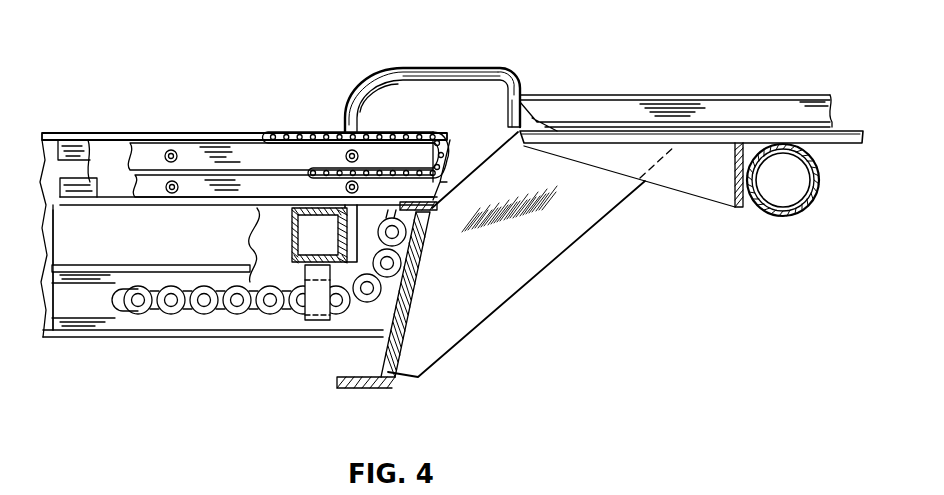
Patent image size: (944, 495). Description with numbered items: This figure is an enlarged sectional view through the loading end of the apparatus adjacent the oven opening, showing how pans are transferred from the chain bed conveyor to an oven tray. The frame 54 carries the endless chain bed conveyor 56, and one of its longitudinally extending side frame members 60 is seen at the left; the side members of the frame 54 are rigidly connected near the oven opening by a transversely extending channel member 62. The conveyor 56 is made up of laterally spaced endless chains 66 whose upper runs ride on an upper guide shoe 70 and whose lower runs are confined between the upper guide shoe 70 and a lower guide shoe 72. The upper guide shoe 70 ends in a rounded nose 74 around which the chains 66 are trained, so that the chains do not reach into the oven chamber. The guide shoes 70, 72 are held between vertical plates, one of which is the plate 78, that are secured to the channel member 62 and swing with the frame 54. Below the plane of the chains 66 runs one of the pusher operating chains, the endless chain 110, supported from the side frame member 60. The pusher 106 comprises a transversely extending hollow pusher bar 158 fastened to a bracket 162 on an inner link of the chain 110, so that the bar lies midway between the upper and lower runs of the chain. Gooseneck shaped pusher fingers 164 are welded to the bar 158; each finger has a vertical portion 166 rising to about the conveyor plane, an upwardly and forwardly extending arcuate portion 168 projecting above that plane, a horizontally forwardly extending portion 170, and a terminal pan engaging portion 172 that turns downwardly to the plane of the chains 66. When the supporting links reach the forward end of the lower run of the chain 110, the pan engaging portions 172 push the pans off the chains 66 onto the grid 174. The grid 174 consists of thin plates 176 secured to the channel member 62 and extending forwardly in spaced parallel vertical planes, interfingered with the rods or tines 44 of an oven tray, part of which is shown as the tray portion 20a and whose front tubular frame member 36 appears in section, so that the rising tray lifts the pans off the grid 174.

The frame 54 is at (72, 133).
The plate 78 is at (118, 148).
The lower guide shoe 72 is at (150, 178).
The upper guide shoe 70 is at (197, 145).
The endless chain 66 is at (290, 131).
The endless chain bed conveyor 56 is at (356, 130).
The arcuate portion 168 is at (415, 152).
The pusher 106 is at (381, 75).
The pusher finger 164 is at (425, 70).
The horizontally forwardly extending portion 170 is at (472, 67).
The pan engaging portion 172 is at (508, 103).
The rounded nose 74 is at (427, 155).
The vertical portion 166 is at (434, 208).
The pusher bar 158 is at (292, 227).
The side frame member 60 is at (57, 237).
The endless chain 110 is at (253, 314).
The bracket 162 is at (306, 327).
The channel member 62 is at (388, 380).
The thin plate 176 is at (548, 263).
The grid 174 is at (603, 218).
The rod or tine 44 is at (695, 135).
The flange 20a is at (733, 207).
The front tubular frame member 36 is at (783, 216).